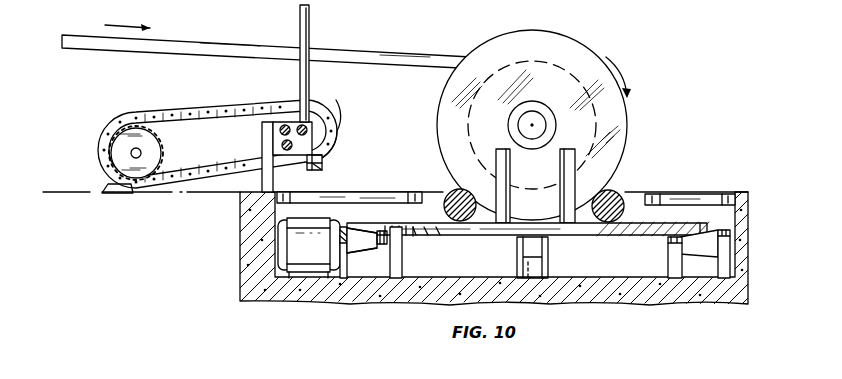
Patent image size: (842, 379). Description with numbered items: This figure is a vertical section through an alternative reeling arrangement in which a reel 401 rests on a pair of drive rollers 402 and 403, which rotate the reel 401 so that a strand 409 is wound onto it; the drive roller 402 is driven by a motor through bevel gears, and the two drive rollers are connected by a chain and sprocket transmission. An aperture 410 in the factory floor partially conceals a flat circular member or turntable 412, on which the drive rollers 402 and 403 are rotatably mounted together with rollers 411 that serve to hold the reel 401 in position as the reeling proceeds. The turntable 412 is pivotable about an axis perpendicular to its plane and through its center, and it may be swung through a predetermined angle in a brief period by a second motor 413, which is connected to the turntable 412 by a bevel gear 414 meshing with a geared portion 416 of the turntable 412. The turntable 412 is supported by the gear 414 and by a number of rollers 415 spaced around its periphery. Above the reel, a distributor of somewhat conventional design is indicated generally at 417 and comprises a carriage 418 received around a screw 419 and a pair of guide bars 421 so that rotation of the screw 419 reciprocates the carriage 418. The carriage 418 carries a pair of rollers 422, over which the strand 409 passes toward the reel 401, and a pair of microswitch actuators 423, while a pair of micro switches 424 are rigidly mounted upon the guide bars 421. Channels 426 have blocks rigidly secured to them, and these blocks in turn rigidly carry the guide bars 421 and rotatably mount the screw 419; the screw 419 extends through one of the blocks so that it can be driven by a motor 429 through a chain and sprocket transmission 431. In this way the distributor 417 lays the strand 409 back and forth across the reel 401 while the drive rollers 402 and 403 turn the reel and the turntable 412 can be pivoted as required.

The reel 401 is at (626, 112).
The drive roller 402 is at (456, 191).
The drive roller 403 is at (612, 191).
The strand 409 is at (147, 51).
The aperture 410 is at (641, 197).
The rollers 411 is at (562, 160).
The turntable 412 is at (587, 238).
The second motor 413 is at (331, 222).
The bevel gear 414 is at (386, 250).
The rollers 415 is at (353, 228).
The geared portion 416 is at (420, 239).
The distributor 417 is at (277, 88).
The carriage 418 is at (303, 157).
The screw 419 is at (305, 132).
The guide bars 421 is at (286, 143).
The rollers 422 is at (306, 23).
The microswitch actuators 423 is at (325, 153).
The micro switches 424 is at (323, 167).
The channels 426 is at (266, 148).
The motor 429 is at (108, 186).
The chain and sprocket transmission 431 is at (203, 110).